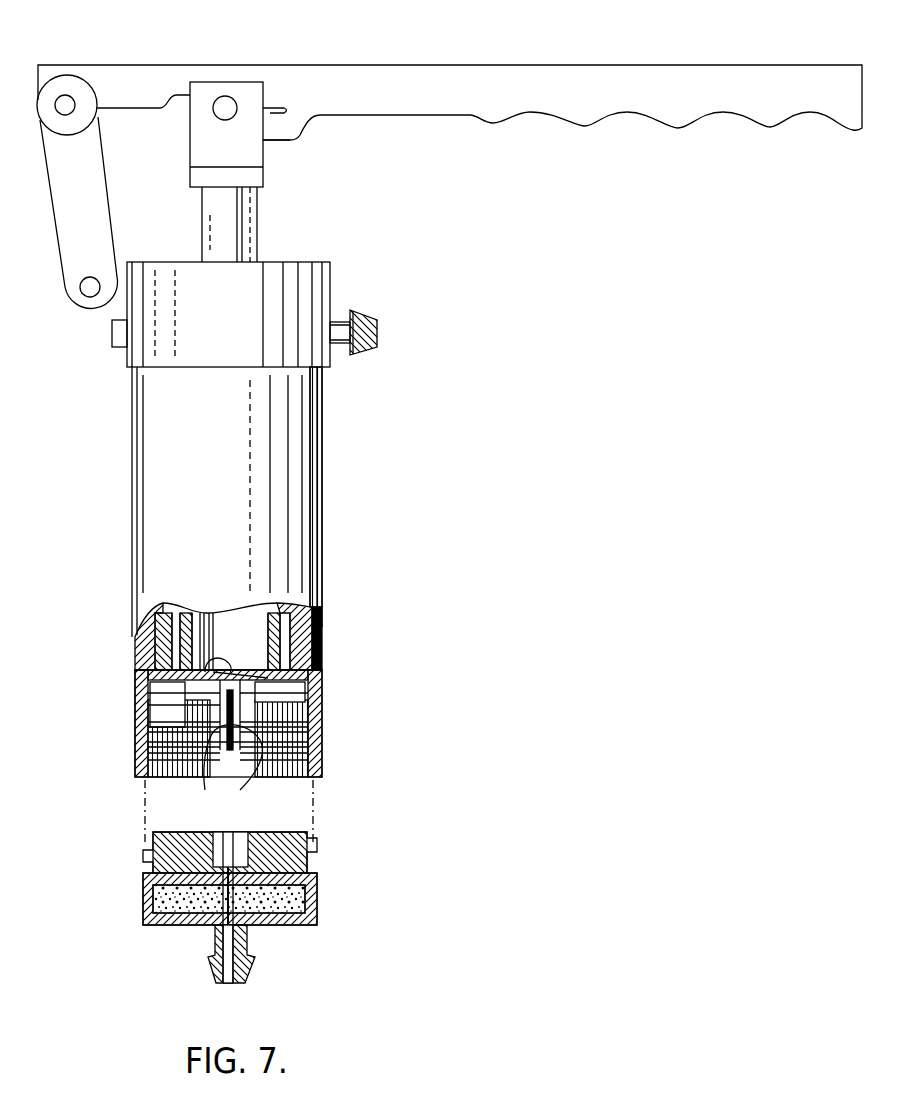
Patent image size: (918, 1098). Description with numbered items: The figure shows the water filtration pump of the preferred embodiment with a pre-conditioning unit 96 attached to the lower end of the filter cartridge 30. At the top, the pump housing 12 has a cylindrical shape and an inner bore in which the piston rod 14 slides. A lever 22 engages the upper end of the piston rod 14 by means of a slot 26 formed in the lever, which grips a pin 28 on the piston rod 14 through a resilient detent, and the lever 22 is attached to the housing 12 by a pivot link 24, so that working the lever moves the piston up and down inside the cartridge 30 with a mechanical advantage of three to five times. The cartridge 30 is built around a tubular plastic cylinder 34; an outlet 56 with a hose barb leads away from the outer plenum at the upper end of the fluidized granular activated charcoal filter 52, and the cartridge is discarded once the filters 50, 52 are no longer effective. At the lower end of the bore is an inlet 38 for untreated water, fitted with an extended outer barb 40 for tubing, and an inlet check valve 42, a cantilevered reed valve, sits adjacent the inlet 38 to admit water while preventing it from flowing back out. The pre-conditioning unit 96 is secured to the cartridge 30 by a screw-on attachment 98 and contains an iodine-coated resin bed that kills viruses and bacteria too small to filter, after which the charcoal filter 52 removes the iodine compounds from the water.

The pump housing 12 is at (288, 262).
The piston rod 14 is at (232, 238).
The lever 22 is at (365, 78).
The pivot link 24 is at (83, 198).
The slot 26 is at (277, 113).
The pin 28 is at (223, 110).
The cartridge 30 is at (330, 563).
The tubular plastic cylinder 34 is at (313, 683).
The inlet 38 is at (252, 777).
The outer barb 40 is at (203, 775).
The inlet check valve 42 is at (150, 702).
The filter 50 is at (150, 632).
The fluidized granular activated charcoal filter 52 is at (150, 660).
The outlet 56 is at (379, 333).
The pre-conditioning unit 96 is at (317, 885).
The screw-on attachment 98 is at (307, 727).